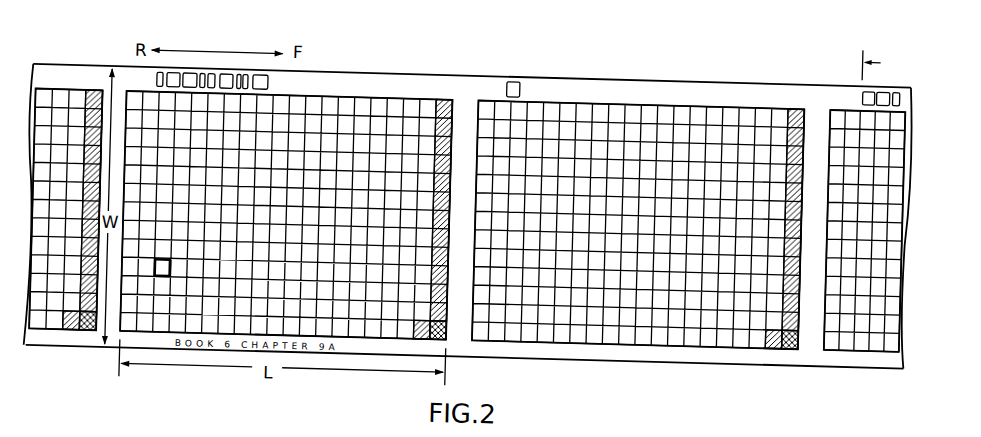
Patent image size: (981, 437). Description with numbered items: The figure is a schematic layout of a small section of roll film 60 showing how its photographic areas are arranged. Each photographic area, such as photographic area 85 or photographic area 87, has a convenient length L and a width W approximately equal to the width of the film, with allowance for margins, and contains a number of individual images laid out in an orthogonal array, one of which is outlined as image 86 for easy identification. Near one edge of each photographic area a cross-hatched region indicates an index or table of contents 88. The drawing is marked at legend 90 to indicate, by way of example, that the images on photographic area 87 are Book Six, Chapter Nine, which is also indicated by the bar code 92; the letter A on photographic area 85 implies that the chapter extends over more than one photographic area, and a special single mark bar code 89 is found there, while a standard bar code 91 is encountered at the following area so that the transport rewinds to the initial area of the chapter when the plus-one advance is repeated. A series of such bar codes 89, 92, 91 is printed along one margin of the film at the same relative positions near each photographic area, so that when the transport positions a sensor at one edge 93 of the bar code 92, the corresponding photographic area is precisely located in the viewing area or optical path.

The film 60 is at (665, 61).
The photographic area 85 is at (404, 86).
The individual image 86 is at (177, 258).
The photographic area 87 is at (726, 88).
The index or table of contents 88 is at (99, 323).
The single mark bar code 89 is at (523, 67).
The marking 90 is at (742, 336).
The standard bar code 91 is at (274, 73).
The bar code 92 is at (856, 75).
The edge of the code 93 is at (885, 65).